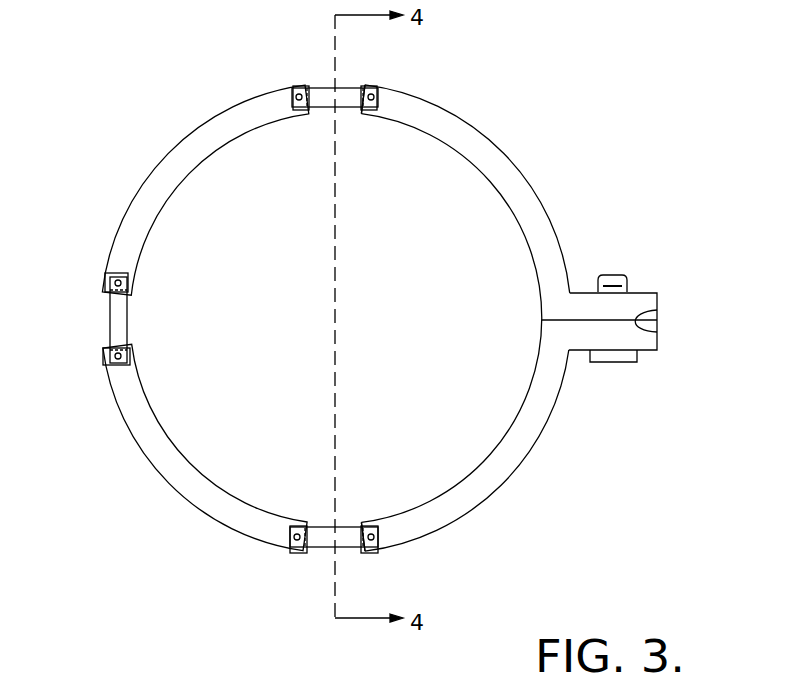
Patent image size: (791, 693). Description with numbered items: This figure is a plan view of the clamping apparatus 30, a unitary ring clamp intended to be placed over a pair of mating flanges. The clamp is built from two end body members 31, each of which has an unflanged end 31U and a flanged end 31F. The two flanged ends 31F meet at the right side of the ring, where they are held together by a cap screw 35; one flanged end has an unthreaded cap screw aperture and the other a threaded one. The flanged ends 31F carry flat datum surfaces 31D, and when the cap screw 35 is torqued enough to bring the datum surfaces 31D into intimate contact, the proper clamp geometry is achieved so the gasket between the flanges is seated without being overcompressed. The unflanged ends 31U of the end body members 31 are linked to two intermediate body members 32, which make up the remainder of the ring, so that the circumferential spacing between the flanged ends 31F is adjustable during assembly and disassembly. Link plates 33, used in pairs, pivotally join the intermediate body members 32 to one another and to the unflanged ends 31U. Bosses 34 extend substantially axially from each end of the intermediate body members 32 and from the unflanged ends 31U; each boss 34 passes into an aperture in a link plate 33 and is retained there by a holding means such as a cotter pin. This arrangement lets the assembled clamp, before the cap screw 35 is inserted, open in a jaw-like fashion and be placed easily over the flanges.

The clamping apparatus 30 is at (126, 155).
The end body member 31 is at (512, 162).
The unflanged end 31U is at (405, 88).
The flanged end 31F is at (657, 294).
The datum surface 31D is at (657, 312).
The intermediate body member 32 is at (181, 141).
The link plate 33 is at (323, 87).
The boss 34 is at (298, 110).
The cap screw 35 is at (612, 278).